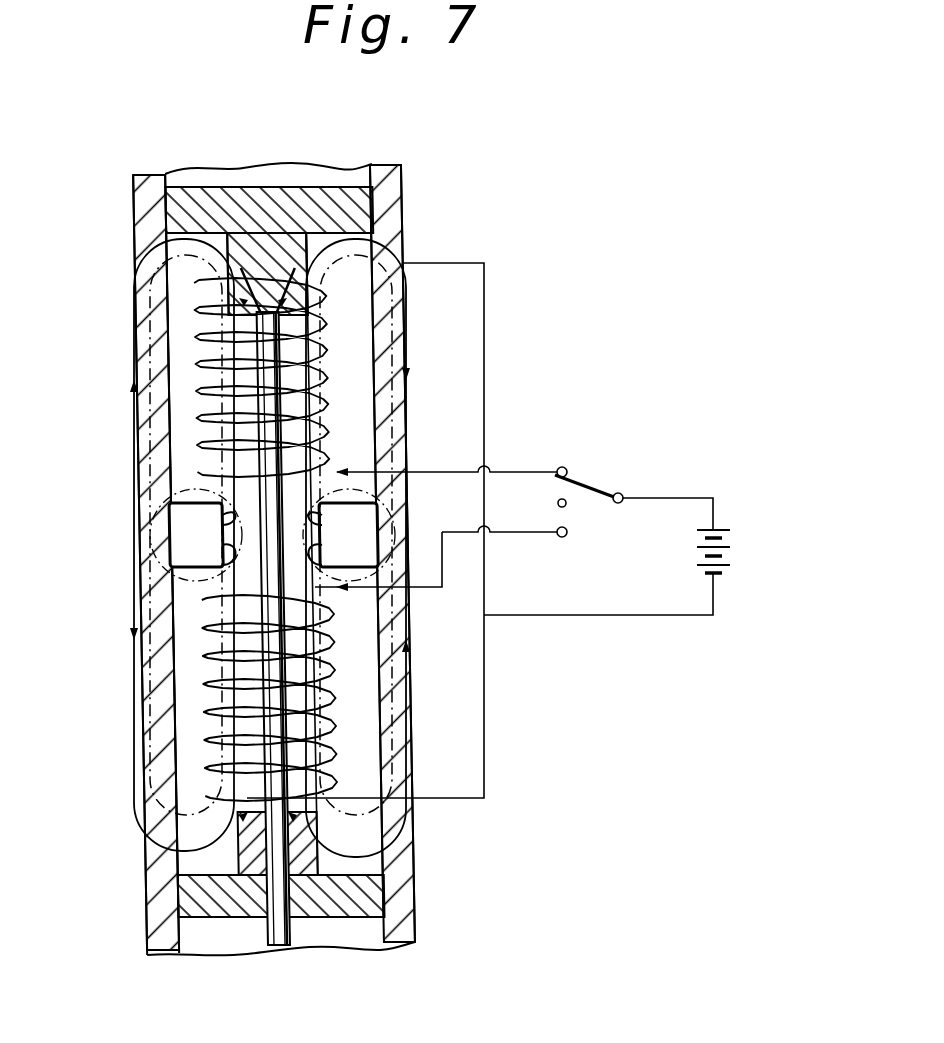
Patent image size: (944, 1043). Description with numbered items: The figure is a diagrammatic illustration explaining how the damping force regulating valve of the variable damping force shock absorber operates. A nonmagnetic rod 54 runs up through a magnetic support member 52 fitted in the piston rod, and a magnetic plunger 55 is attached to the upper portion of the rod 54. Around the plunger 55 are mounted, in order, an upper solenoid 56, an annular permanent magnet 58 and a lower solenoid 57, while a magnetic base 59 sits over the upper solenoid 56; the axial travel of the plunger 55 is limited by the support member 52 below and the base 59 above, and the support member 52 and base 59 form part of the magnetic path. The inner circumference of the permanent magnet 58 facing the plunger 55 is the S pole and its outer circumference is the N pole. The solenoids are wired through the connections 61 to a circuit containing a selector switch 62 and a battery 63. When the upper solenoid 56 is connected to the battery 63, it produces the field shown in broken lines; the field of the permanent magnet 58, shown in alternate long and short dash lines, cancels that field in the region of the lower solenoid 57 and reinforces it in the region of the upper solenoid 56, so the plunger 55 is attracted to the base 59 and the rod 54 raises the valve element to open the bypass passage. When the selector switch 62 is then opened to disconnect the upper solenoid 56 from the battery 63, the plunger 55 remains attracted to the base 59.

The magnetic support member 52 is at (246, 822).
The nonmagnetic rod 54 is at (279, 852).
The magnetic plunger 55 is at (215, 622).
The upper solenoid 56 is at (198, 392).
The lower solenoid 57 is at (222, 742).
The annular permanent magnet 58 is at (196, 568).
The magnetic base 59 is at (262, 268).
The lead wire 61 is at (458, 470).
The selector switch 62 is at (604, 490).
The battery 63 is at (736, 555).